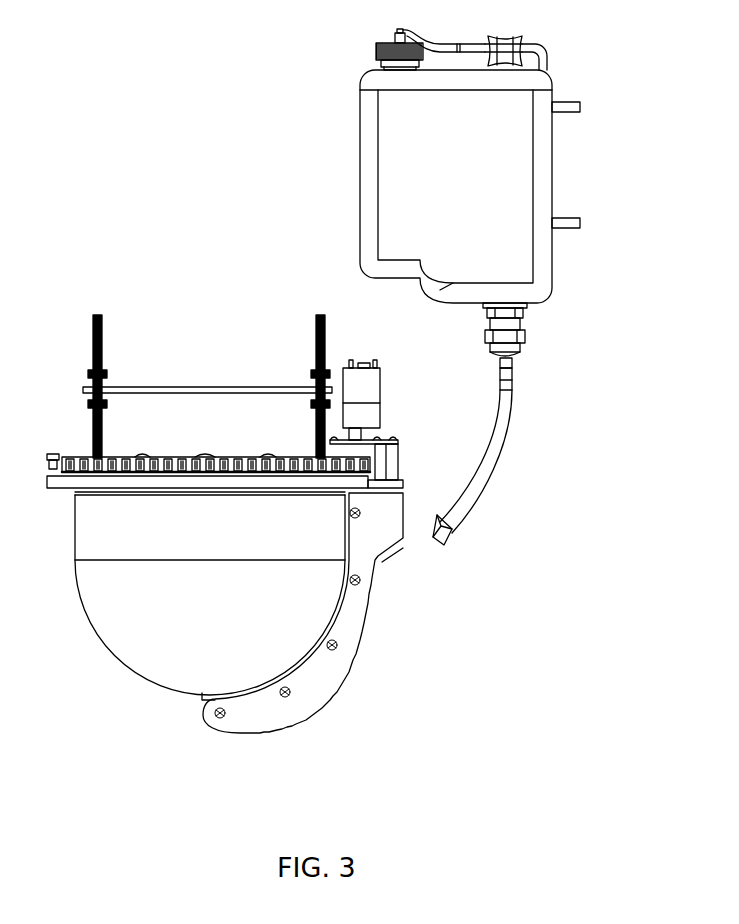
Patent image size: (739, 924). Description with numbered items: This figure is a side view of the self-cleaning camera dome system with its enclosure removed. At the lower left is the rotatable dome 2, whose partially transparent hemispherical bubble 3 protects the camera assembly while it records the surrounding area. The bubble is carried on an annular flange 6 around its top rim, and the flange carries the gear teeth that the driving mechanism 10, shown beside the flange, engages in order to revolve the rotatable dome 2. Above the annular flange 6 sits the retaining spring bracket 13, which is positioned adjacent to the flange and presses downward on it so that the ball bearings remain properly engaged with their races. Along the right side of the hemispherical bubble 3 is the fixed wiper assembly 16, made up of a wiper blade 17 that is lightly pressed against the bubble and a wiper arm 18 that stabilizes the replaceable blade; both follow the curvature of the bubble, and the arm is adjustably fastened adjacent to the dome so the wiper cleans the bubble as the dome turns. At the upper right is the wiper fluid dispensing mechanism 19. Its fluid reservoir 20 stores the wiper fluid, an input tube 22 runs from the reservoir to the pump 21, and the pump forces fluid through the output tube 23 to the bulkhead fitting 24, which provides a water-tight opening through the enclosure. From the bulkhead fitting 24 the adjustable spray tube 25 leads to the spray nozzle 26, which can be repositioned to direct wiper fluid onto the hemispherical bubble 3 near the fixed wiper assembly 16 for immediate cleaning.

The rotatable dome 2 is at (88, 652).
The hemispherical bubble 3 is at (219, 628).
The annular flange 6 is at (52, 467).
The driving mechanism 10 is at (397, 404).
The retaining spring bracket 13 is at (222, 457).
The fixed wiper assembly 16 is at (350, 688).
The wiper blade 17 is at (203, 702).
The wiper arm 18 is at (275, 712).
The wiper fluid dispensing mechanism 19 is at (605, 303).
The fluid reservoir 20 is at (471, 193).
The pump 21 is at (502, 63).
The input tube 22 is at (400, 28).
The output tube 23 is at (551, 54).
The bulkhead fitting 24 is at (527, 345).
The adjustable spray tube 25 is at (498, 455).
The spray nozzle 26 is at (452, 534).